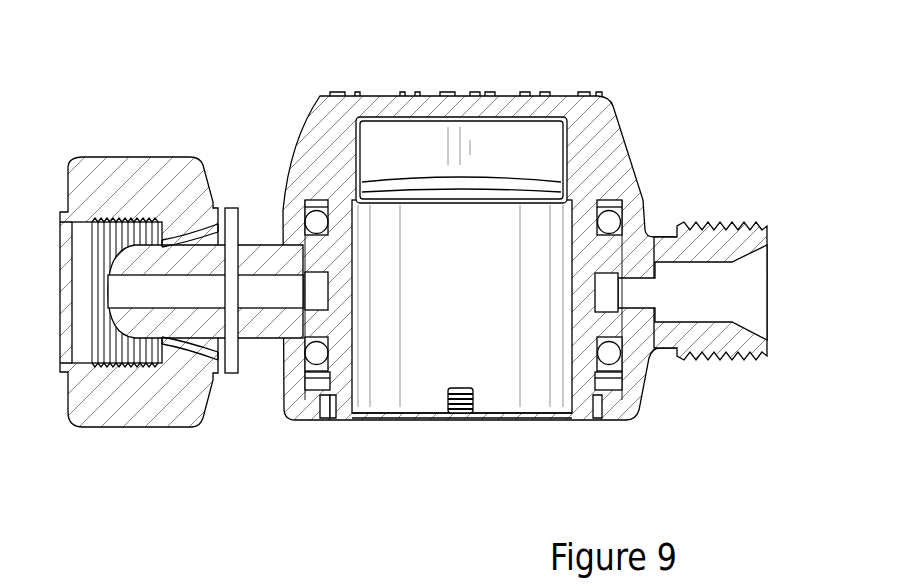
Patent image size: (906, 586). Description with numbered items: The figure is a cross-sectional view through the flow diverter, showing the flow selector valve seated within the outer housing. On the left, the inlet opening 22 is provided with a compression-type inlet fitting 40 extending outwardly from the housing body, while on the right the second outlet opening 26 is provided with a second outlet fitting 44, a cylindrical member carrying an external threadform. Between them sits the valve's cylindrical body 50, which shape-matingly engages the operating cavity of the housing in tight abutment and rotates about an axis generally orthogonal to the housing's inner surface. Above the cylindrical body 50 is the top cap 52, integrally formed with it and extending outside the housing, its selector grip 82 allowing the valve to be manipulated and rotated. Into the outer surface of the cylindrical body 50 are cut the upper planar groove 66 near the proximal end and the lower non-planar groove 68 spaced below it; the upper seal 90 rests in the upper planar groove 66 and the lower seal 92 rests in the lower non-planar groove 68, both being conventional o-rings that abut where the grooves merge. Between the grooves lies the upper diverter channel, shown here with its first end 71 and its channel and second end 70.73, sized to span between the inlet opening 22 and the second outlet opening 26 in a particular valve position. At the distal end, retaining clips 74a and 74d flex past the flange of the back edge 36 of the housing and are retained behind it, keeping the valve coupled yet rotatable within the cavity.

The inlet fitting 40 is at (144, 156).
The top cap 52 is at (610, 97).
The second outlet fitting 44 is at (738, 221).
The second outlet opening 26 is at (623, 292).
The selector grip 82 is at (511, 91).
The first end 71 is at (302, 296).
The upper seal 90 is at (312, 204).
The lower seal 92 is at (331, 352).
The upper planar groove 66 is at (613, 202).
The lower non-planar groove 68 is at (596, 338).
The inlet opening 22 is at (330, 284).
The upper diverter channel and second end 70.73 is at (593, 280).
The cylindrical body 50 is at (309, 385).
The back edge 36 is at (319, 421).
The retaining clip 74a is at (332, 421).
The retaining clip 74d is at (598, 416).